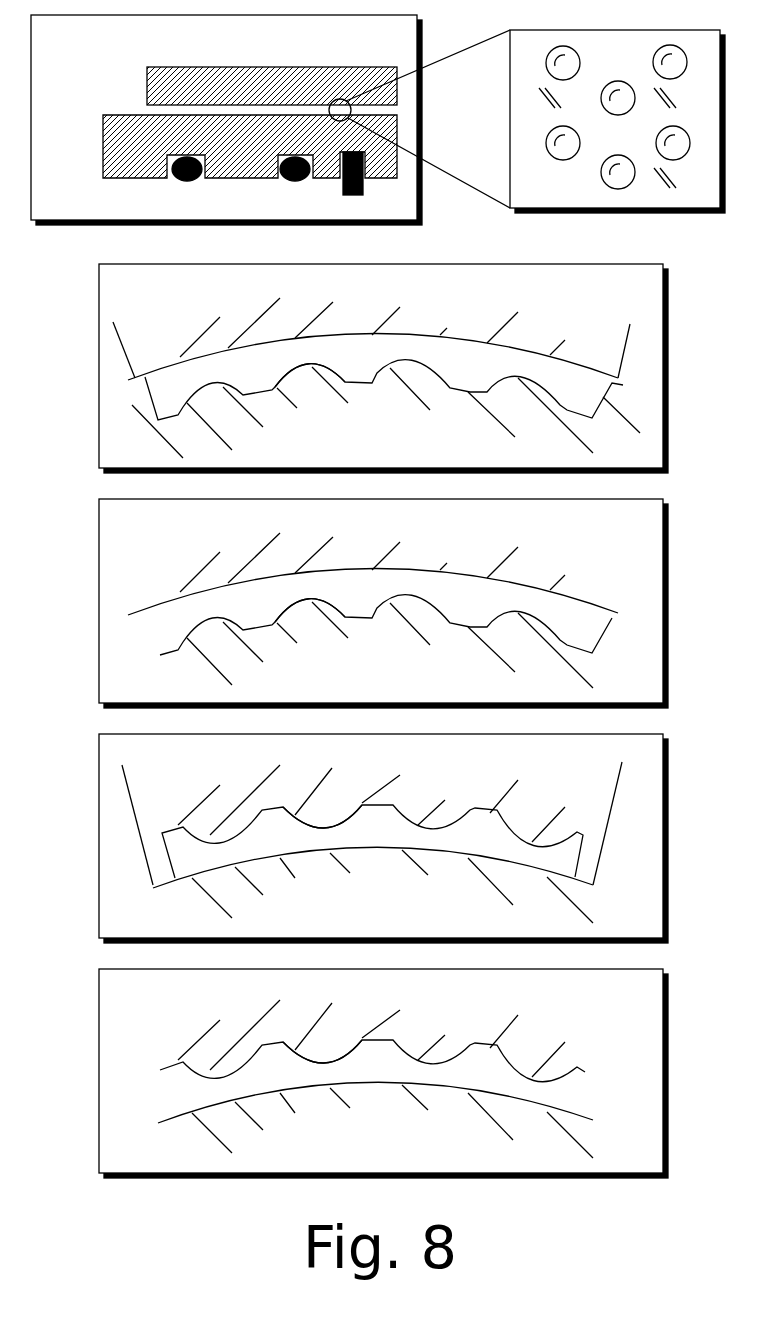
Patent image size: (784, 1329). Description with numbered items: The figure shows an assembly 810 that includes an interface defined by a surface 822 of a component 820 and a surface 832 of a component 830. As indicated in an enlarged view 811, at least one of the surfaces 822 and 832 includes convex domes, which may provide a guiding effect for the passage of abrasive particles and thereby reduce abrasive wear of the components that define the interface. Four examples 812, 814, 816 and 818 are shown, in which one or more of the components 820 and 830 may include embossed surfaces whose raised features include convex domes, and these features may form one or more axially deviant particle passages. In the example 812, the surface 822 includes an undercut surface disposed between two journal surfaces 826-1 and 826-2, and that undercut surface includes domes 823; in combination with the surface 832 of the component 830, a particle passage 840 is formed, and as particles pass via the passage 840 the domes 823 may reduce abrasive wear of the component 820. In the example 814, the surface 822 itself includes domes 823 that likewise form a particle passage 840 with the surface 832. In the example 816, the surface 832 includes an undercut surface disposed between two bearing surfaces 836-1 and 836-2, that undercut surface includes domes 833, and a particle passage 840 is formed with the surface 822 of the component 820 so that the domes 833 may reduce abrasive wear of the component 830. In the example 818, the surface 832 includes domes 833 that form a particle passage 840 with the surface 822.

The assembly 810 is at (79, 45).
The enlarged view 811 is at (559, 200).
The example 812 is at (146, 293).
The example 814 is at (153, 528).
The example 816 is at (153, 928).
The example 818 is at (156, 1153).
The component 820 is at (147, 68).
The surface 822 is at (147, 103).
The domes 823 is at (287, 373).
The journal surface 826-1 is at (113, 322).
The journal surface 826-2 is at (630, 324).
The component 830 is at (105, 143).
The surface 832 is at (118, 115).
The domes 833 is at (313, 828).
The bearing surface 836-1 is at (122, 765).
The bearing surface 836-2 is at (622, 762).
The particle passage 840 is at (499, 375).